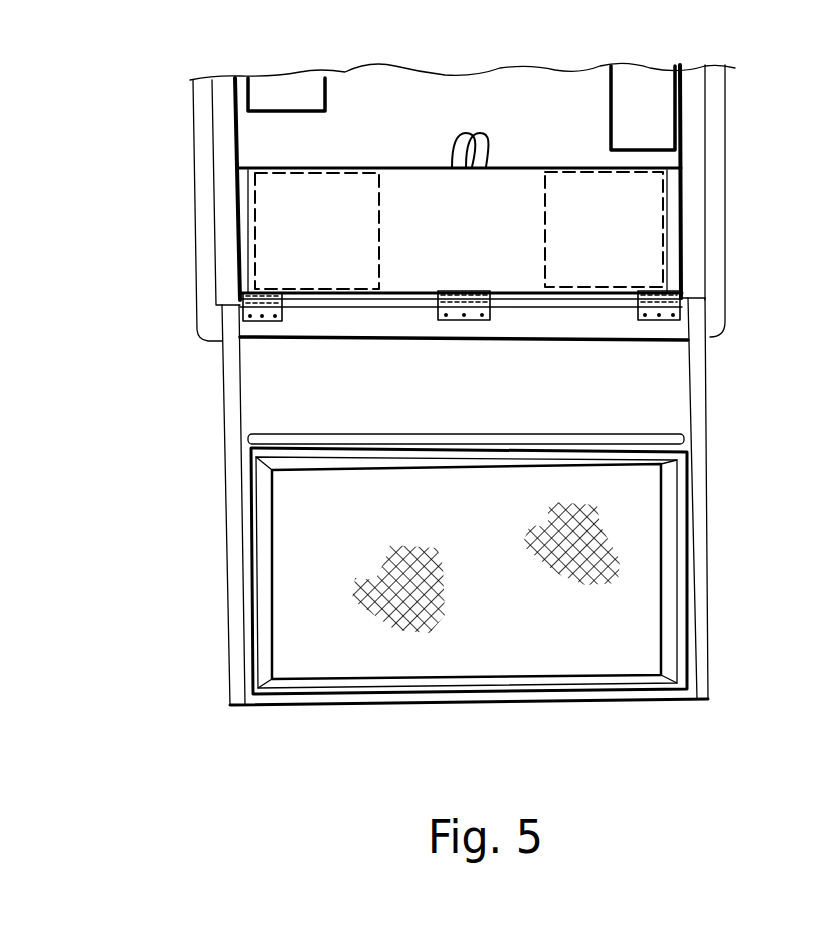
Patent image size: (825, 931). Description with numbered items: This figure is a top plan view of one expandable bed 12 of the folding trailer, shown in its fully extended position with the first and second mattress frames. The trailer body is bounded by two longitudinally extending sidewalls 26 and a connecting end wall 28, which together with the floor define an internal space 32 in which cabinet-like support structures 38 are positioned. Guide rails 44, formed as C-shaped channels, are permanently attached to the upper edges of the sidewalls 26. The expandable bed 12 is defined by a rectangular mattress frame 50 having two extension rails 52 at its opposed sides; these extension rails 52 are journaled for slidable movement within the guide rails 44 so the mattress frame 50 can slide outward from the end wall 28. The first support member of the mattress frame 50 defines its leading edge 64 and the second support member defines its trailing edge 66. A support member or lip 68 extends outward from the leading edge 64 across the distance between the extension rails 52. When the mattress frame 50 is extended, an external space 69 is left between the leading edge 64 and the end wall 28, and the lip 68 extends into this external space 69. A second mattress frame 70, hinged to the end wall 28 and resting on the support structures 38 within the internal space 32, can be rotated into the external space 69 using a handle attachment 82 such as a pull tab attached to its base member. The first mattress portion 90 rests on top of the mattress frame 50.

The expandable bed 12 is at (461, 533).
The sidewall 26 is at (198, 275).
The end wall 28 is at (588, 337).
The internal space 32 is at (527, 119).
The support structure 38 is at (330, 212).
The guide rail 44 is at (222, 167).
The mattress frame 50 is at (476, 533).
The extension rail 52 is at (227, 597).
The leading edge 64 is at (469, 518).
The trailing edge 66 is at (470, 708).
The lip 68 is at (332, 444).
The external space 69 is at (706, 387).
The second mattress frame 70 is at (482, 244).
The handle attachment 82 is at (456, 140).
The first mattress portion 90 is at (533, 602).